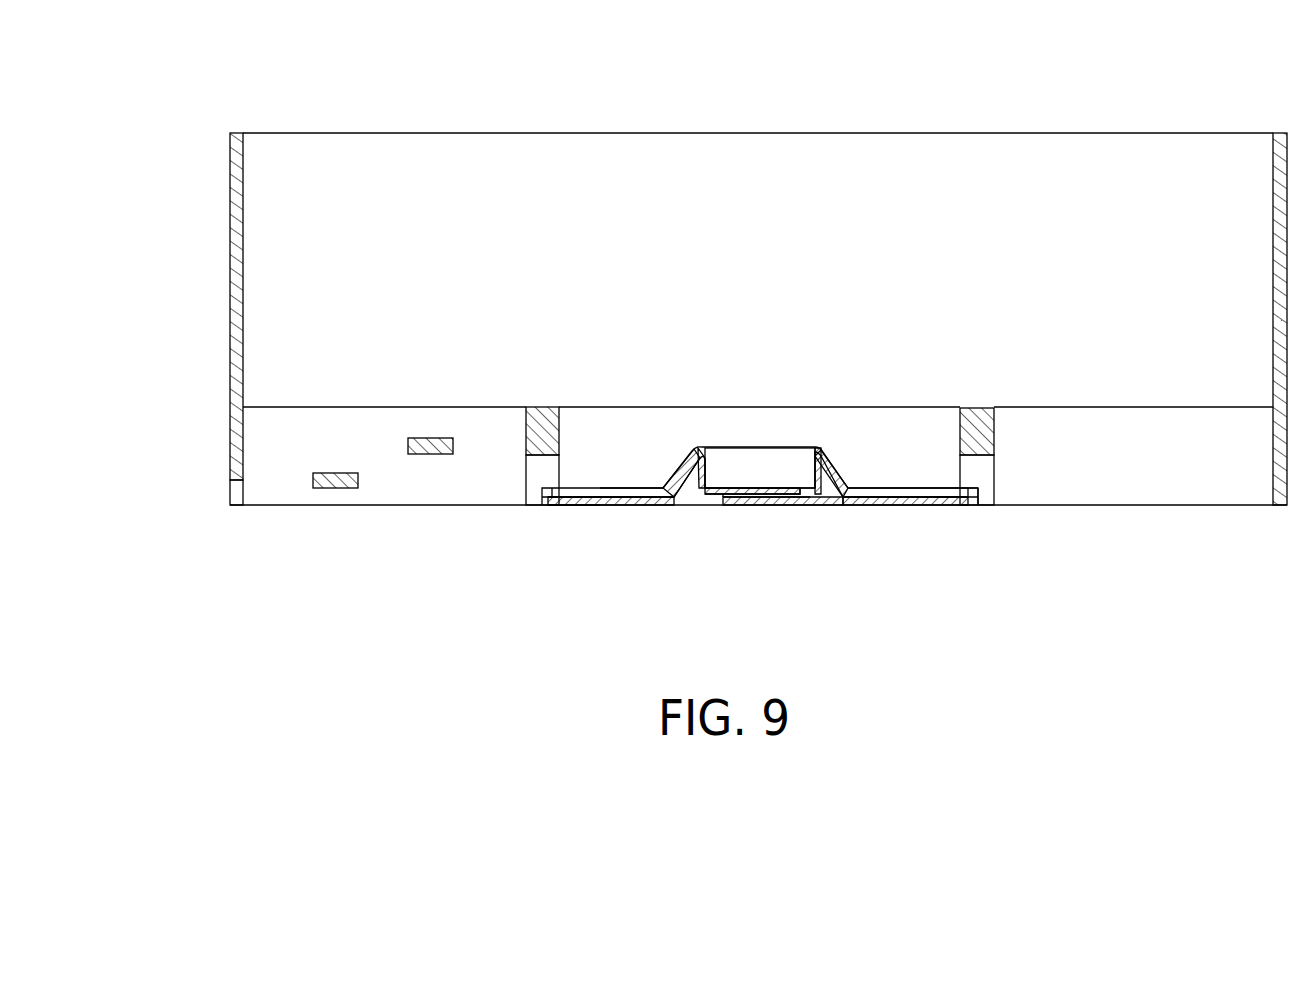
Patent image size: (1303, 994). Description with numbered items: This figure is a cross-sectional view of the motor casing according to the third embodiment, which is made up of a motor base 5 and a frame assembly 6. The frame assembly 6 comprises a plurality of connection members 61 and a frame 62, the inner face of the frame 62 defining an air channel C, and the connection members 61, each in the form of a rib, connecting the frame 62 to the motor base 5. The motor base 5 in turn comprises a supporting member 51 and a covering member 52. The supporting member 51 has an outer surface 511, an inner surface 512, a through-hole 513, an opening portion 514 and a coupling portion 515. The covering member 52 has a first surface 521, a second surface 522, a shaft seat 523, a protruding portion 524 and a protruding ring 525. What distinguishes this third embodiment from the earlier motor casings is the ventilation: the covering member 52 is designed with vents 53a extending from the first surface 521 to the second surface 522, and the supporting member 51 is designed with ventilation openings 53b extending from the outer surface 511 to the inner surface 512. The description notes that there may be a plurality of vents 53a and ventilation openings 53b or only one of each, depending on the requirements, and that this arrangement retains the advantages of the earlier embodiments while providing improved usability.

The air channel C is at (724, 168).
The frame assembly 6 is at (702, 319).
The connection member 61 is at (288, 417).
The frame 62 is at (230, 287).
The motor base 5 is at (770, 480).
The supporting member 51 is at (771, 453).
The outer surface 511 is at (995, 430).
The inner surface 512 is at (943, 505).
The through-hole 513 is at (652, 483).
The opening portion 514 is at (582, 505).
The coupling portion 515 is at (545, 407).
The covering member 52 is at (789, 500).
The first surface 521 is at (877, 478).
The second surface 522 is at (877, 478).
The shaft seat 523 is at (840, 473).
The protruding portion 524 is at (968, 503).
The protruding ring 525 is at (992, 503).
The vent 53a is at (598, 500).
The ventilation opening 53b is at (535, 472).